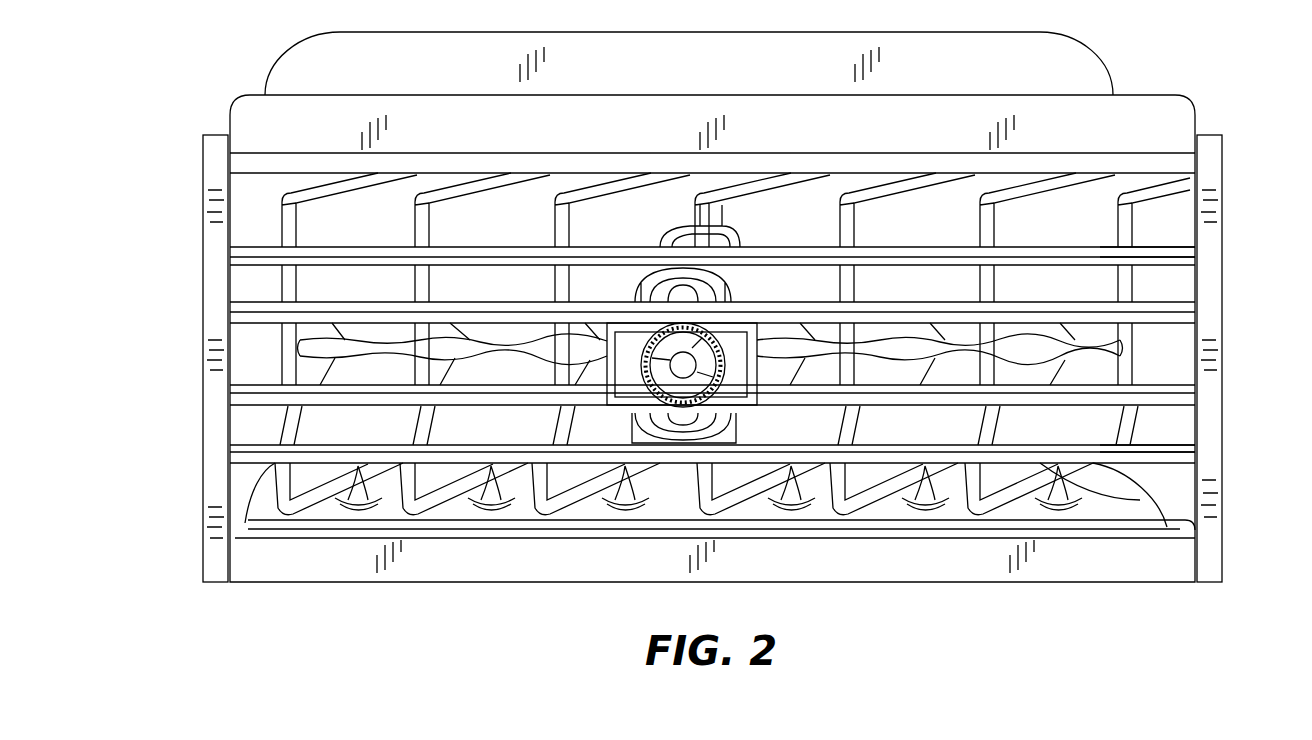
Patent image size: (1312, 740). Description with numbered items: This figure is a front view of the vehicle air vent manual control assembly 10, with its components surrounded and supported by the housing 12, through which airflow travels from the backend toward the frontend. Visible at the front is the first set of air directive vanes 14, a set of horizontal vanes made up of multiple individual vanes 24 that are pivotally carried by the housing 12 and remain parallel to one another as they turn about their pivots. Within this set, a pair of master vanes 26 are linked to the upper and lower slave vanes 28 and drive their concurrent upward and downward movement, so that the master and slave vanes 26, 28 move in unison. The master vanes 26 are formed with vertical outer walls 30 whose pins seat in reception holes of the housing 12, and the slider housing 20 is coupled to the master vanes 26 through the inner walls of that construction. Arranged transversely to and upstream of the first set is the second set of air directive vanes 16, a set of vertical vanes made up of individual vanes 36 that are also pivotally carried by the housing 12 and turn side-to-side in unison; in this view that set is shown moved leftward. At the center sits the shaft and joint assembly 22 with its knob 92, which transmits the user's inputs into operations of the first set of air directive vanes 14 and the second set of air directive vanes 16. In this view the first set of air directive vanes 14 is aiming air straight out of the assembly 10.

The vehicle air vent manual control assembly 10 is at (1155, 205).
The housing 12 is at (193, 125).
The first set of air directive vanes 14 is at (1075, 252).
The second set of air directive vanes 16 is at (1033, 183).
The slider housing 20 is at (733, 345).
The shaft and joint assembly 22 is at (648, 374).
The vanes 24 is at (245, 320).
The master vanes 26 is at (1180, 400).
The slave vanes 28 is at (1185, 260).
The vertical outer walls 30 is at (232, 343).
The vanes 36 is at (460, 207).
The knob 92 is at (650, 345).